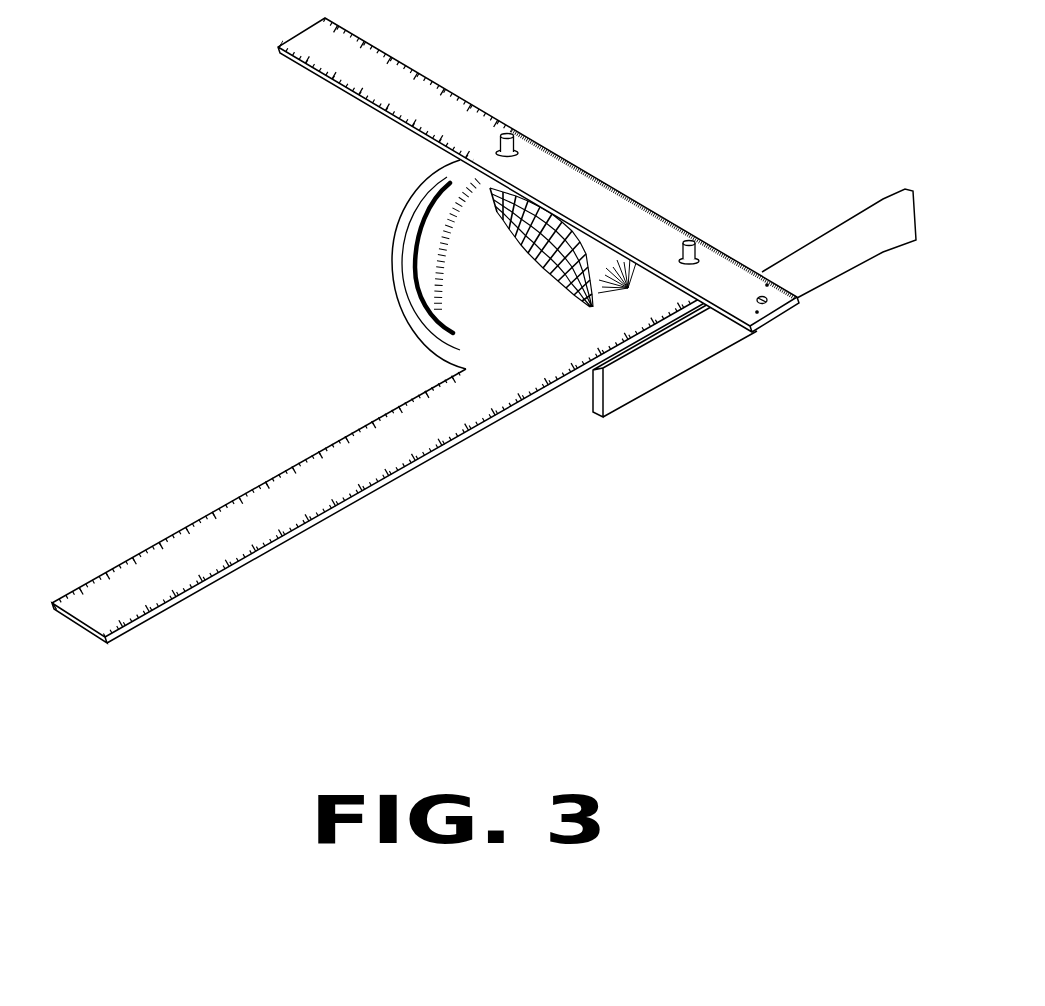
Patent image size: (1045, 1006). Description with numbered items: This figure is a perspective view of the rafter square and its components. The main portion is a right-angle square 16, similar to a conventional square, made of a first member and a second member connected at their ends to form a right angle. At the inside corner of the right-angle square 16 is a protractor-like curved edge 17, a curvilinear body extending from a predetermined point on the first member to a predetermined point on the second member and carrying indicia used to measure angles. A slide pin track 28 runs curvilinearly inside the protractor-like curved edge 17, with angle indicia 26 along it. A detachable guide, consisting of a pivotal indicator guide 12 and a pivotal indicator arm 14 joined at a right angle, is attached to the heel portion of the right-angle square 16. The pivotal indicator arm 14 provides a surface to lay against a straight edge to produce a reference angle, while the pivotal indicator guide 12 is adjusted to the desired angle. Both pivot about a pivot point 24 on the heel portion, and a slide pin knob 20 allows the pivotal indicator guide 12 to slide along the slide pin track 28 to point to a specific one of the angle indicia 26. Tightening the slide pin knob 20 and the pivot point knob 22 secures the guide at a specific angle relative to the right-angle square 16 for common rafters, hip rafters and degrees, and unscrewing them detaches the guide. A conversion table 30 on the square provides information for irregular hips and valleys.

The pivotal indicator guide 12 is at (543, 165).
The pivotal indicator arm 14 is at (655, 367).
The right-angle square 16 is at (367, 495).
The protractor-like curved edge 17 is at (425, 337).
The slide pin knob 20 is at (495, 140).
The pivot point knob 22 is at (693, 240).
The pivot point 24 is at (700, 258).
The angle indicia 26 is at (408, 312).
The slide pin track 28 is at (423, 275).
The conversion table 30 is at (575, 302).